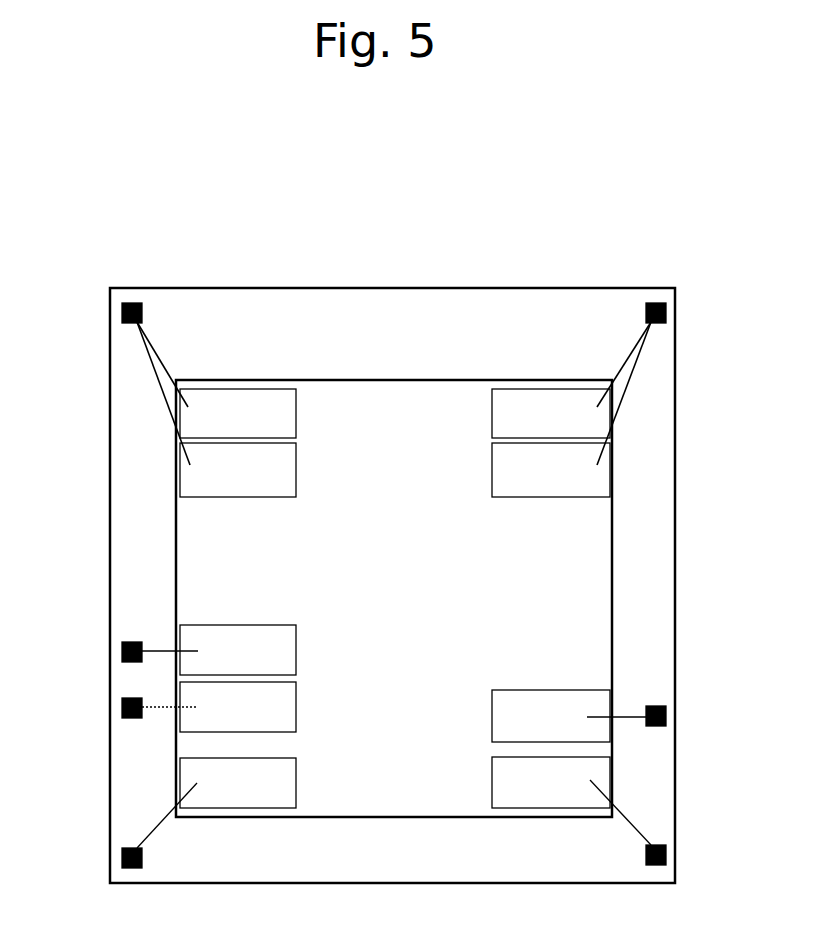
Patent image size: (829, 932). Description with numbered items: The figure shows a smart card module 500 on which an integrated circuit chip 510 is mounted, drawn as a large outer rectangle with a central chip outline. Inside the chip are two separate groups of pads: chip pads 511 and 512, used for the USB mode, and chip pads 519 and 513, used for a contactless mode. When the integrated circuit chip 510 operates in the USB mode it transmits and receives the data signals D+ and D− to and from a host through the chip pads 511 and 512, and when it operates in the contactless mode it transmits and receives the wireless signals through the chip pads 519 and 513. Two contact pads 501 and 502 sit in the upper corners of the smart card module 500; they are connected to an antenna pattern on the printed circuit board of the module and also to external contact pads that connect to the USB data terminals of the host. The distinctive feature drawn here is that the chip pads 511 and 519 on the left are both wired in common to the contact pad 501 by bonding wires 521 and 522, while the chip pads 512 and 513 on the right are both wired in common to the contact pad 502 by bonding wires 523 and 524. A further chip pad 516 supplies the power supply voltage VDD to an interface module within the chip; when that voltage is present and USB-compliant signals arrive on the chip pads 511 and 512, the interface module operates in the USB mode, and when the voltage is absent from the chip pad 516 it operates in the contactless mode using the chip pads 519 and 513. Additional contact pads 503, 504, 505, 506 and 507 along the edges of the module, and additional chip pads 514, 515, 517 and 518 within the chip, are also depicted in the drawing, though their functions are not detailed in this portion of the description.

The smart card module 500 is at (495, 288).
The integrated circuit chip 510 is at (538, 380).
The contact pad 501 is at (122, 311).
The contact pad 502 is at (666, 308).
The third pad 503 is at (666, 714).
The fourth pad 504 is at (666, 852).
The fifth pad 505 is at (122, 855).
The sixth pad 506 is at (122, 707).
The seventh pad 507 is at (122, 650).
The chip pad 511 is at (297, 413).
The chip pad 512 is at (490, 413).
The chip pad 513 is at (490, 471).
The SIO terminal 514 is at (490, 718).
The VSS terminal 515 is at (490, 783).
The chip pad 516 is at (297, 784).
The RST terminal 517 is at (297, 707).
The CLK terminal 518 is at (297, 650).
The chip pad 519 is at (297, 471).
The bonding wire 521 is at (155, 374).
The bonding wire 522 is at (150, 346).
The bonding wire 523 is at (632, 342).
The bonding wire 524 is at (636, 370).